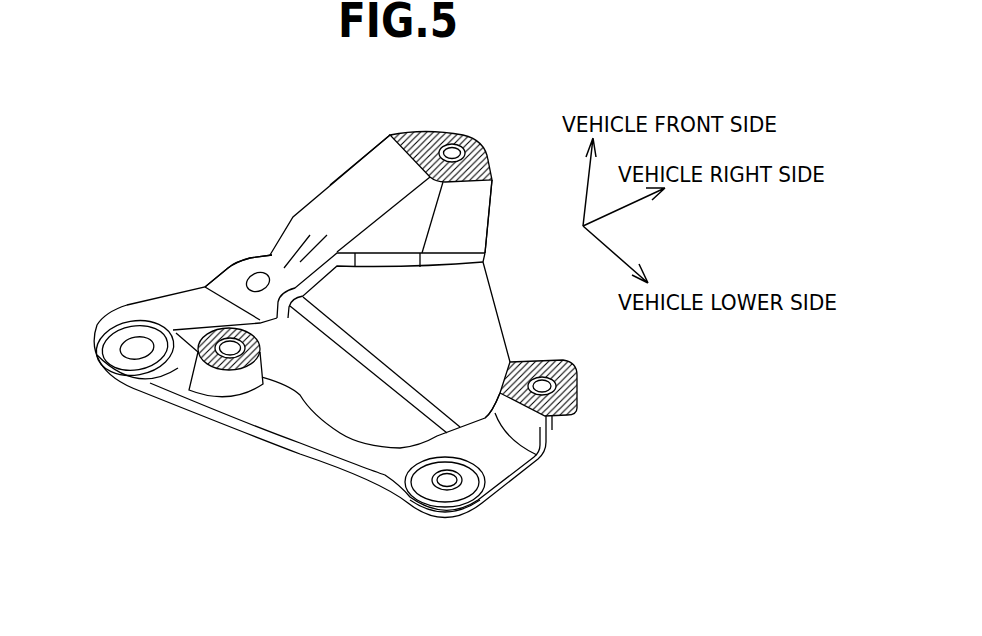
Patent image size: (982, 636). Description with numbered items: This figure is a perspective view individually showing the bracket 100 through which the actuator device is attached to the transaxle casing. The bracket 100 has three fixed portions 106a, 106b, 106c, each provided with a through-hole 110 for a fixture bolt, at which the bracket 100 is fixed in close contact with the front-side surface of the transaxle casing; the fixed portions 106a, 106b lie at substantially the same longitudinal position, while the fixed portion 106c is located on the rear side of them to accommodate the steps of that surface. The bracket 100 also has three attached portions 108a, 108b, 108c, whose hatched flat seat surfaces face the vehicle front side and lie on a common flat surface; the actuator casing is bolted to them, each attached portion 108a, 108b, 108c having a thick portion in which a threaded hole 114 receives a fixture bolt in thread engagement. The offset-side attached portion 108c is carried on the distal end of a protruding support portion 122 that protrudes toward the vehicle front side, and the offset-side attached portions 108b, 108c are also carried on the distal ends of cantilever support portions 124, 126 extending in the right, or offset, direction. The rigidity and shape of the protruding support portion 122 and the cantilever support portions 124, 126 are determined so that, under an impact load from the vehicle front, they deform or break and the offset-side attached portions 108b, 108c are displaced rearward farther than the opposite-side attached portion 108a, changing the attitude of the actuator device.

The bracket 100 is at (245, 168).
The fixed portion 106a is at (96, 385).
The fixed portion 106b is at (417, 535).
The fixed portion 106c is at (225, 248).
The attached portion 108a is at (205, 372).
The attached portion 108b is at (538, 367).
The attached portion 108c is at (443, 132).
The through-hole 110 is at (258, 273).
The threaded hole 114 is at (465, 146).
The protruding support portion 122 is at (477, 217).
The cantilever support portion 124 is at (498, 463).
The cantilever support portion 126 is at (346, 189).